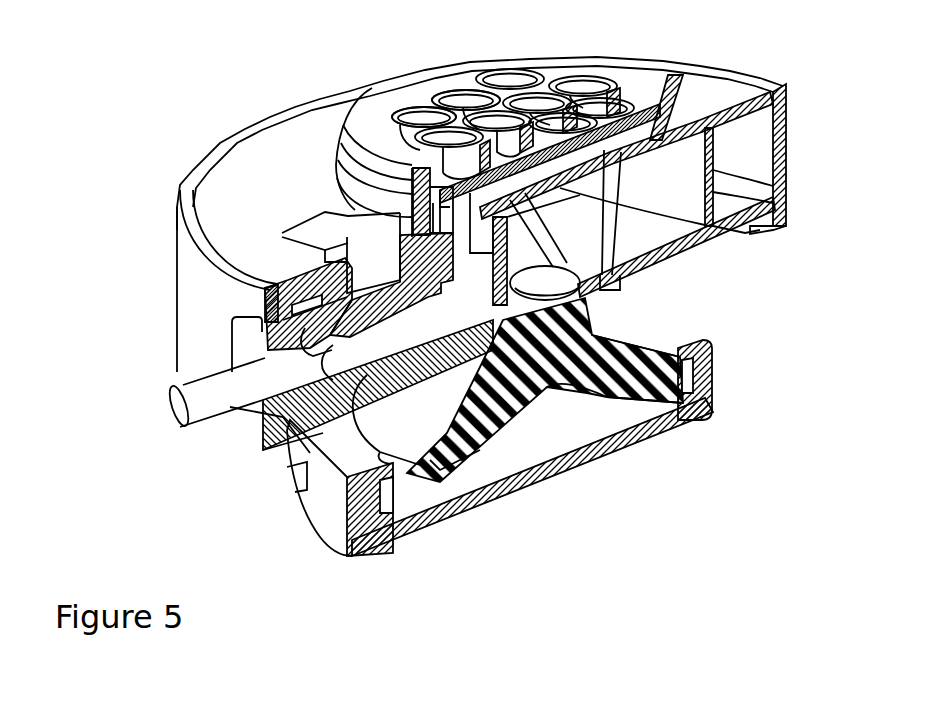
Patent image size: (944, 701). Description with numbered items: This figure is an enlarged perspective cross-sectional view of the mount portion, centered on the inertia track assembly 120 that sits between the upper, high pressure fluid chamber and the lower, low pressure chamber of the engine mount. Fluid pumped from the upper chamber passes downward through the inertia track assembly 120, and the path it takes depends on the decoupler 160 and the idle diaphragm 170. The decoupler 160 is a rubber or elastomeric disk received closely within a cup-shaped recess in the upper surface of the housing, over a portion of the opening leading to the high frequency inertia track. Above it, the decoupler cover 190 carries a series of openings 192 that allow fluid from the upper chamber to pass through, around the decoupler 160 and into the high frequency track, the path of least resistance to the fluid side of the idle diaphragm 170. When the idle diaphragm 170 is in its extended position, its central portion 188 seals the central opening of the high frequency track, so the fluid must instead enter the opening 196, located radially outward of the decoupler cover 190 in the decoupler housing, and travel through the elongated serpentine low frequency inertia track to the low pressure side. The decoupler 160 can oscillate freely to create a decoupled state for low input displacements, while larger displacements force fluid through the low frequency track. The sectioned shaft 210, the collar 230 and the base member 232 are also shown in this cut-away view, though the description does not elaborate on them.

The inertia track assembly 120 is at (790, 140).
The decoupler 160 is at (640, 108).
The idle diaphragm 170 is at (623, 413).
The central portion of the idle diaphragm 188 is at (595, 345).
The decoupler cover 190 is at (527, 63).
The openings 192 is at (463, 108).
The opening 196 is at (310, 228).
The shaft 210 is at (175, 392).
The collar 230 is at (710, 366).
The base plate 232 is at (473, 503).